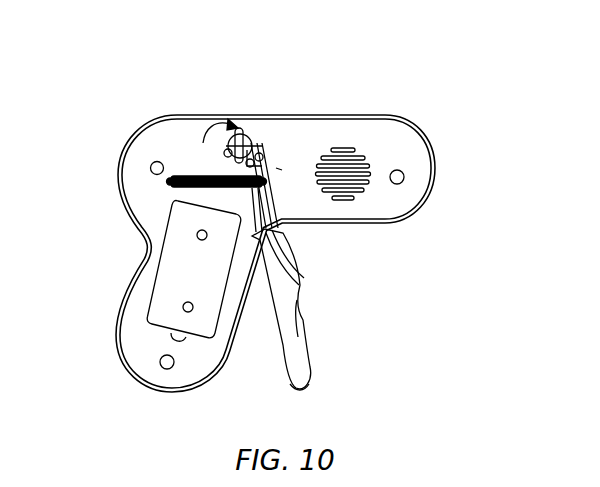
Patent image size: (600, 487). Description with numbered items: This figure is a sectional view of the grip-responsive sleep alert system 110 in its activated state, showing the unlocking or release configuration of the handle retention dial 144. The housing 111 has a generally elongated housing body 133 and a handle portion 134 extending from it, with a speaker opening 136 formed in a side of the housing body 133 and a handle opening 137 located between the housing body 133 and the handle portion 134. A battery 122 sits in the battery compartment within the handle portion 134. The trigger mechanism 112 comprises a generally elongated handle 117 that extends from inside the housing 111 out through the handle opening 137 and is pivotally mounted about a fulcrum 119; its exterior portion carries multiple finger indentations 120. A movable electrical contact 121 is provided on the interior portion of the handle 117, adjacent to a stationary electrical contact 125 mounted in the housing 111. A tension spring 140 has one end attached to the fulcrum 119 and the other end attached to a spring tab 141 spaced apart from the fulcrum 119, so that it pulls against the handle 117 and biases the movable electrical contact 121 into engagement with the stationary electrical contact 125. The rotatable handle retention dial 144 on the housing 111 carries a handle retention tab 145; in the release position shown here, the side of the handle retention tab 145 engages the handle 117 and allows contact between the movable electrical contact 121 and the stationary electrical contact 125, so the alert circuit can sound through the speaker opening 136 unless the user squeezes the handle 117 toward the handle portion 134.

The safety enclosure device 110 is at (465, 97).
The housing 111 is at (120, 133).
The trigger mechanism 112 is at (329, 392).
The handle 117 is at (299, 386).
The fulcrum 119 is at (278, 190).
The finger indentations 120 is at (301, 318).
The movable electrical contact 121 is at (278, 165).
The battery 122 is at (187, 268).
The stationary electrical contact 125 is at (260, 152).
The housing body 133 is at (143, 128).
The handle portion 134 is at (120, 300).
The speaker opening 136 is at (366, 190).
The handle opening 137 is at (296, 282).
The tension spring 140 is at (176, 176).
The spring tab 141 is at (171, 180).
The handle retention dial 144 is at (252, 152).
The handle retention tab 145 is at (236, 130).